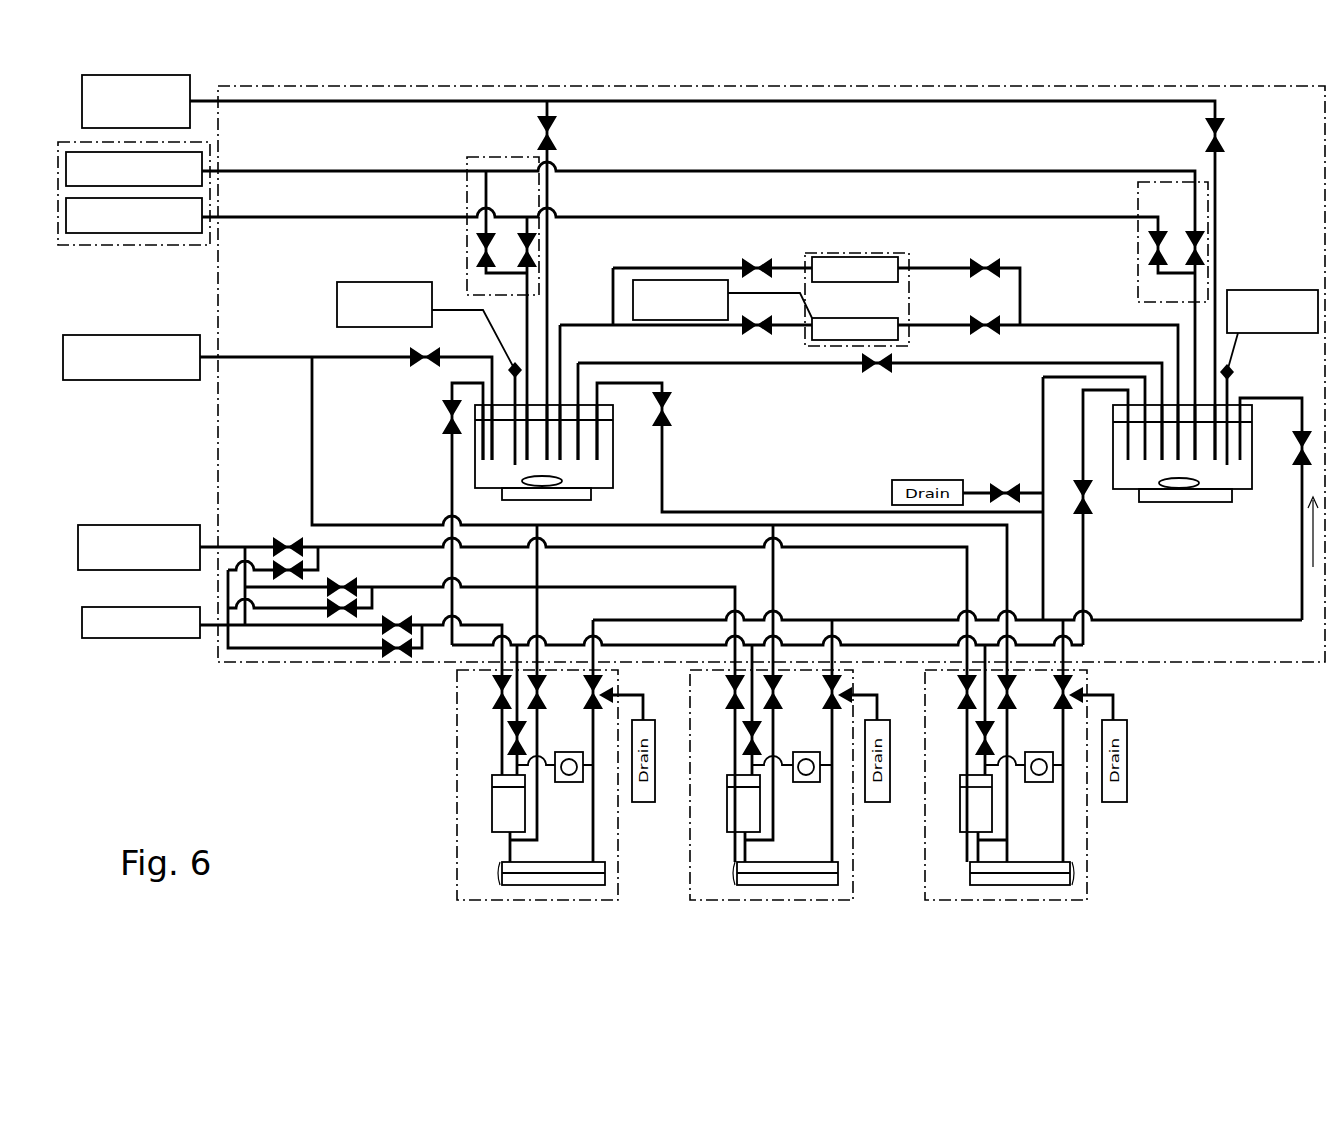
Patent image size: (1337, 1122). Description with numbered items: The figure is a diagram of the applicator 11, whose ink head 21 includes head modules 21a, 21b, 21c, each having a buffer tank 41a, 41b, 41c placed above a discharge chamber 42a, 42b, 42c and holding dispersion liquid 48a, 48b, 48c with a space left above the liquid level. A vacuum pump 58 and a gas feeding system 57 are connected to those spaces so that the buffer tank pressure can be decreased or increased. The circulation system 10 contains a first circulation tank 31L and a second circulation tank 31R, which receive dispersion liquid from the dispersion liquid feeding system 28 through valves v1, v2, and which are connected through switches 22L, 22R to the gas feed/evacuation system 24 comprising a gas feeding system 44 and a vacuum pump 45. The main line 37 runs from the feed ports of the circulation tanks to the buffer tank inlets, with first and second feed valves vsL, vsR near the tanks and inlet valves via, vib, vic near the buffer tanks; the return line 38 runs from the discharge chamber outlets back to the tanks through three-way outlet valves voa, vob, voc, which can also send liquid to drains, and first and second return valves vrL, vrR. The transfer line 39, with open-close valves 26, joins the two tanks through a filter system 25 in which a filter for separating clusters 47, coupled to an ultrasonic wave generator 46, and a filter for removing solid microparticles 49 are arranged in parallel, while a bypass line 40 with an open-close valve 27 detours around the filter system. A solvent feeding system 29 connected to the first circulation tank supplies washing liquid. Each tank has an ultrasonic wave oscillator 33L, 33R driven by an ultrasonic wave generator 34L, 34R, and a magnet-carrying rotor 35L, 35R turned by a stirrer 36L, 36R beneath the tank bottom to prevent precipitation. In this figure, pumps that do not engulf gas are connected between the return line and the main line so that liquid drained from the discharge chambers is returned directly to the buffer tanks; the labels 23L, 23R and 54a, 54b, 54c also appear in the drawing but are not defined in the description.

The circulation system 10 is at (318, 86).
The applicator 11 is at (149, 57).
The ink head 21 is at (345, 788).
The head module 21a is at (457, 850).
The head module 21b is at (690, 860).
The head module 21c is at (1087, 850).
The switch 22L is at (467, 197).
The switch 22R is at (1138, 197).
The left reservoir 23L is at (607, 465).
The right reservoir 23R is at (1125, 457).
The gas feed/evacuation system 24 is at (141, 247).
The filter system 25 is at (909, 260).
The open-close valves 26 is at (757, 262).
The open-close valve 27 is at (880, 372).
The dispersion liquid feeding system 28 is at (191, 82).
The solvent feeding system 29 is at (135, 381).
The first circulation tank 31L is at (615, 437).
The second circulation tank 31R is at (1112, 427).
The ultrasonic wave oscillator 33L is at (508, 365).
The ultrasonic wave oscillator 33R is at (1236, 373).
The ultrasonic wave generator 34L is at (337, 305).
The ultrasonic wave generator 34R is at (1260, 290).
The rotor 35L is at (546, 487).
The rotor 35R is at (1180, 488).
The stirrer 36L is at (502, 494).
The stirrer 36R is at (1225, 503).
The main line 37 is at (453, 557).
The return line 38 is at (1222, 662).
The transfer line 39 is at (1090, 325).
The bypass line 40 is at (915, 368).
The buffer tank 41a is at (492, 805).
The buffer tank 41b is at (727, 812).
The buffer tank 41c is at (960, 815).
The discharge chamber 42a is at (498, 875).
The discharge chamber 42b is at (733, 878).
The discharge chamber 42c is at (1075, 878).
The gas feeding system 44 is at (203, 155).
The vacuum pump 45 is at (203, 203).
The ultrasonic wave generator 46 is at (685, 280).
The filter for separating clusters 47 is at (840, 342).
The dispersion liquid 48a is at (495, 782).
The dispersion liquid 48b is at (755, 822).
The dispersion liquid 48c is at (965, 840).
The filter for removing solid microparticles 49 is at (838, 262).
The sensor a 54a is at (569, 784).
The sensor b 54b is at (806, 784).
The sensor c 54c is at (1039, 784).
The gas feeding system 57 is at (116, 524).
The vacuum pump 58 is at (108, 639).
The valve v1 is at (557, 133).
The valve v2 is at (1205, 134).
The first feed valve vsL is at (447, 412).
The second feed valve vsR is at (1087, 498).
The first return valve vrL is at (670, 405).
The second return valve vrR is at (1298, 460).
The outlet valve voa is at (600, 680).
The outlet valve vob is at (838, 680).
The outlet valve voc is at (1070, 685).
The inlet valve via is at (512, 738).
The inlet valve vib is at (748, 738).
The inlet valve vic is at (981, 738).